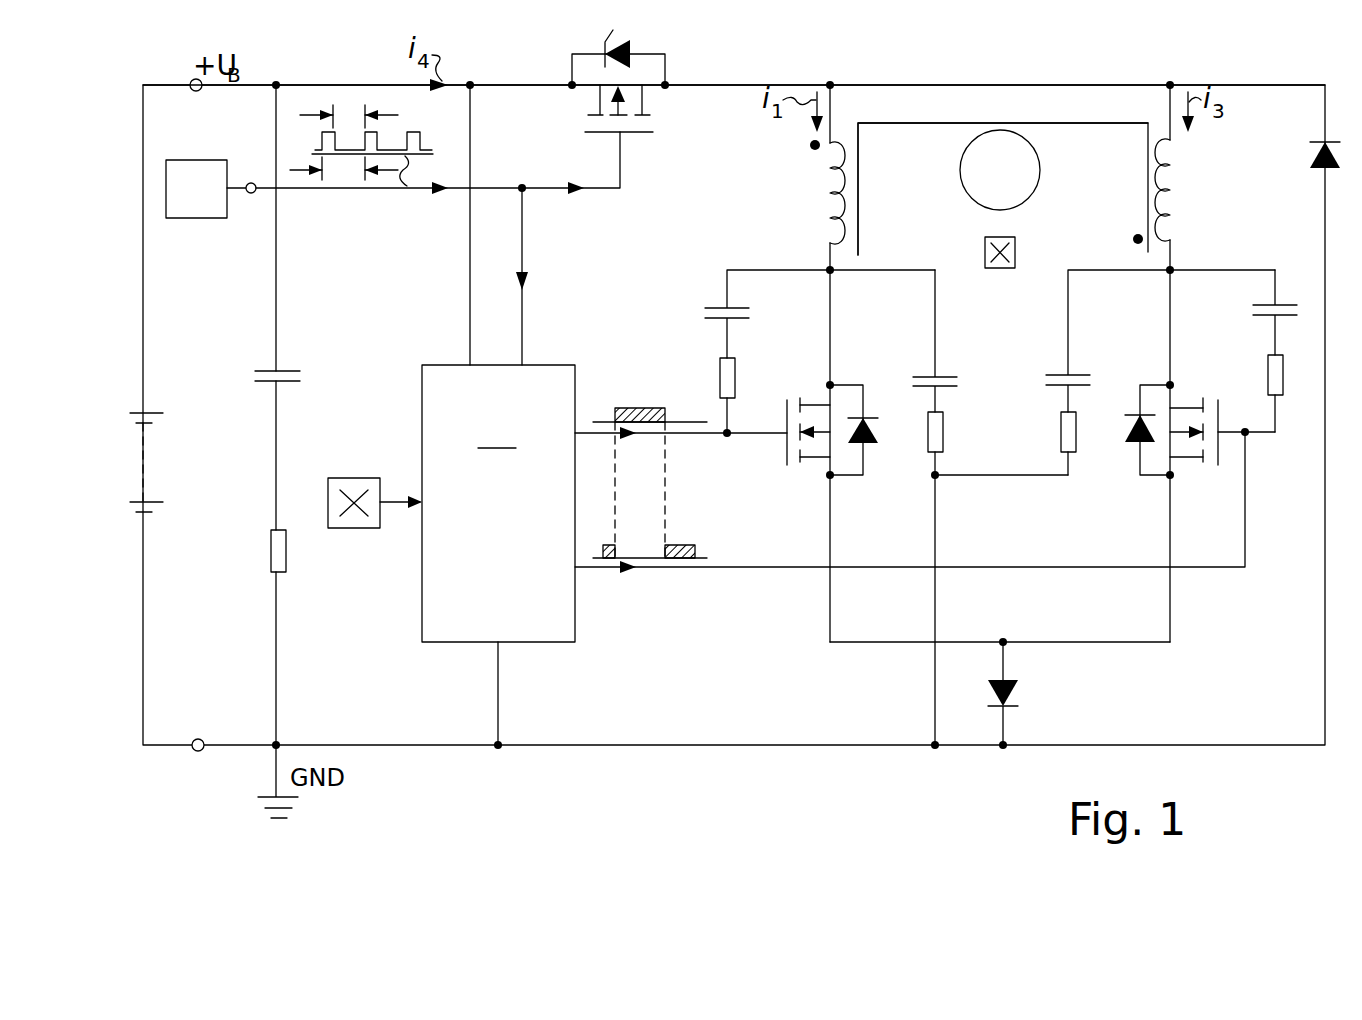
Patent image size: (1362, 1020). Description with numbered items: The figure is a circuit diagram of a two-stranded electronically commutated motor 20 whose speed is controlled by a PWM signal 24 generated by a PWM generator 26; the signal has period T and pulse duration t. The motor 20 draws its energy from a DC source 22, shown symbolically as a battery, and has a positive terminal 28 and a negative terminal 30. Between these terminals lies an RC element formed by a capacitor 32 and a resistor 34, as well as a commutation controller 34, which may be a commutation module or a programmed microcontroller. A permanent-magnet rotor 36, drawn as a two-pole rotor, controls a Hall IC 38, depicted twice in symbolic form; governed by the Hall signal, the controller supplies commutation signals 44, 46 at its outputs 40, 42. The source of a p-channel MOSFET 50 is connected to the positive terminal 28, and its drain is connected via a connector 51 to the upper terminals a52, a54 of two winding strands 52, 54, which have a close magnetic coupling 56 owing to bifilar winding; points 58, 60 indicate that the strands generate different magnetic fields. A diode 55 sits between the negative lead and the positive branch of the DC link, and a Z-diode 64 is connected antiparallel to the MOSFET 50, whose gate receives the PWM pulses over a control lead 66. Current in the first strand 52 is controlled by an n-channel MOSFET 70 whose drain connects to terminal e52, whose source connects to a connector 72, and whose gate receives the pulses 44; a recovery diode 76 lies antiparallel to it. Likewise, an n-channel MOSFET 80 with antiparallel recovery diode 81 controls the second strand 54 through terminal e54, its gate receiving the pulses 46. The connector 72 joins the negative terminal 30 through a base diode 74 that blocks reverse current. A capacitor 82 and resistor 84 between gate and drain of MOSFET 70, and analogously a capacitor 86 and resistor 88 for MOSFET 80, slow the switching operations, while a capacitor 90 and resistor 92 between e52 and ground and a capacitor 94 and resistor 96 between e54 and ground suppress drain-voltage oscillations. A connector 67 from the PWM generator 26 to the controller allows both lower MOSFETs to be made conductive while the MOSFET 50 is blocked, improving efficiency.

The electronically commutated motor 20 is at (1016, 120).
The DC source 22 is at (148, 436).
The PWM signal 24 is at (420, 140).
The PWM generator 26 is at (182, 160).
The positive terminal 28 is at (192, 82).
The negative terminal 30 is at (198, 739).
The capacitor 32 is at (282, 371).
The commutation controller 34 is at (283, 560).
The permanent-magnet rotor 36 is at (1040, 170).
The Hall IC 38 is at (354, 478).
The output 40 is at (581, 432).
The output 42 is at (578, 570).
The commutation signal 44 is at (639, 404).
The commutation signal 46 is at (603, 545).
The p-channel MOSFET 50 is at (650, 146).
The connector 51 is at (963, 84).
The first winding strand 52 is at (818, 188).
The second winding strand 54 is at (1182, 190).
The diode 55 is at (1308, 154).
The magnetic coupling 56 is at (913, 123).
The point 58 is at (812, 146).
The point 60 is at (1134, 238).
The Z-diode 64 is at (634, 51).
The control lead 66 is at (454, 195).
The connector 67 is at (523, 255).
The n-channel MOSFET 70 is at (784, 412).
The connector 72 is at (964, 642).
The base diode 74 is at (1017, 692).
The recovery diode 76 is at (876, 432).
The n-channel MOSFET 80 is at (1220, 410).
The recovery diode 81 is at (1128, 434).
The capacitor 82 is at (731, 306).
The resistor 84 is at (726, 390).
The capacitor 86 is at (1262, 304).
The resistor 88 is at (1284, 372).
The capacitor 90 is at (929, 370).
The resistor 92 is at (932, 446).
The capacitor 94 is at (1058, 372).
The resistor 96 is at (1070, 436).
The upper terminal a52 is at (830, 85).
The upper terminal a54 is at (1170, 85).
The terminal e52 is at (824, 268).
The terminal e54 is at (1170, 270).